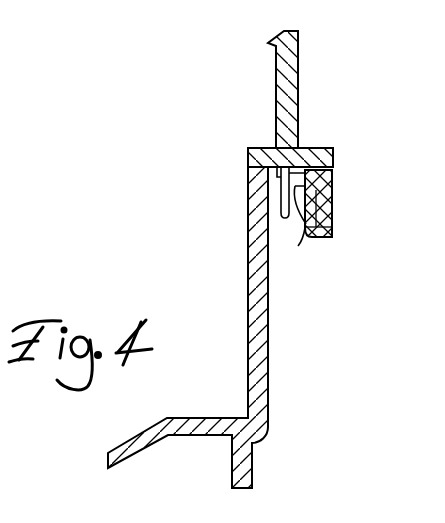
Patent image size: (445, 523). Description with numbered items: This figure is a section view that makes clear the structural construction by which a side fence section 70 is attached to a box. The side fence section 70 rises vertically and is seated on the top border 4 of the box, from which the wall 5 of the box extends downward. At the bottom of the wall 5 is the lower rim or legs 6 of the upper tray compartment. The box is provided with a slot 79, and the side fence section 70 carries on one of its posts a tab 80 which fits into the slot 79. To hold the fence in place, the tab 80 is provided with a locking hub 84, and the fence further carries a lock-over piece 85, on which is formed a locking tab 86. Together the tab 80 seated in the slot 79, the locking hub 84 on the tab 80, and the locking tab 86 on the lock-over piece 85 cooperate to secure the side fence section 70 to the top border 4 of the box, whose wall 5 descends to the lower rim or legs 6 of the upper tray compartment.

The top border of the box 4 is at (345, 170).
The wall of the box 5 is at (268, 352).
The lower rim or legs of the upper tray compartment 6 is at (243, 457).
The side fence section 70 is at (292, 83).
The slot in the box 79 is at (333, 147).
The tab on the fence 80 is at (292, 250).
The locking hub 84 is at (334, 198).
The lock-over piece 85 is at (333, 220).
The locking tab 86 is at (302, 244).